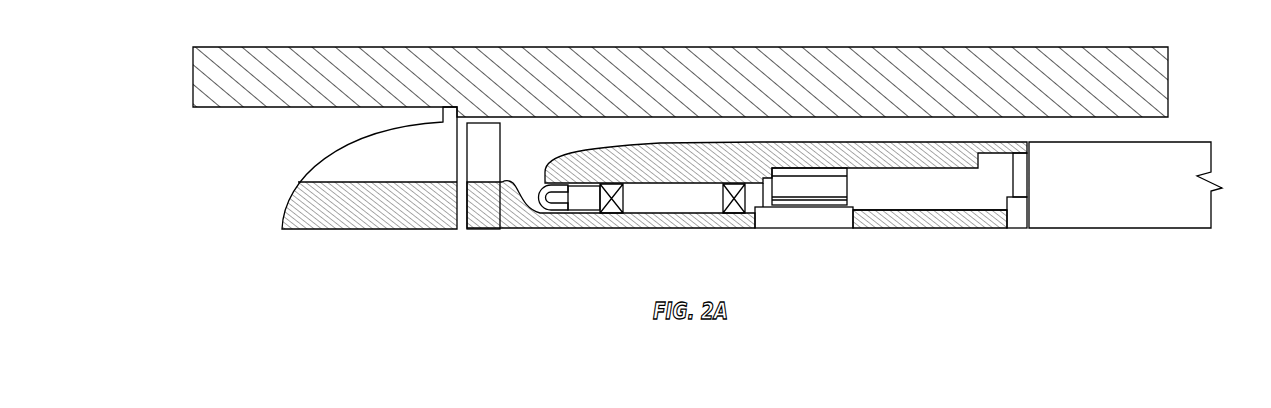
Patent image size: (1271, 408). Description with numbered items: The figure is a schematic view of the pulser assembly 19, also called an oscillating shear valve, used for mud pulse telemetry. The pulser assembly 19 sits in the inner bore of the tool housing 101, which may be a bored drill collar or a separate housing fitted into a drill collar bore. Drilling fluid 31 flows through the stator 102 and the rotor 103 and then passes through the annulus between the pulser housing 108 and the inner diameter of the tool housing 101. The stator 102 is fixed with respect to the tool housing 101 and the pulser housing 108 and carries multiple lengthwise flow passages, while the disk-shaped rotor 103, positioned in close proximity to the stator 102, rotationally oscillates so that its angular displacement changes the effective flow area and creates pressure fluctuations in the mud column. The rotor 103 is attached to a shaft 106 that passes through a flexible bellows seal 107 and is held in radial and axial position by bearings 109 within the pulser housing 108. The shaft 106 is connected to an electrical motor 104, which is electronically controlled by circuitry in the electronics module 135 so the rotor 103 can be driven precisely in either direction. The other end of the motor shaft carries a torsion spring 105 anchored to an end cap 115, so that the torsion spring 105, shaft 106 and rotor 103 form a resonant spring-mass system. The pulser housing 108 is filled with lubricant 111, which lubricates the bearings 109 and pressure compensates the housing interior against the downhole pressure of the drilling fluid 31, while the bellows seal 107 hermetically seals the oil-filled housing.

The pulser assembly 19 is at (938, 130).
The drilling fluid 31 is at (268, 159).
The tool housing 101 is at (295, 47).
The stator 102 is at (347, 145).
The rotor 103 is at (485, 122).
The electrical motor 104 is at (808, 172).
The torsion spring 105 is at (948, 208).
The shaft 106 is at (517, 188).
The flexible bellows seal 107 is at (550, 202).
The pulser housing 108 is at (687, 145).
The bearings 109 is at (735, 195).
The lubricant 111 is at (904, 200).
The end cap 115 is at (1022, 180).
The electronics module 135 is at (1163, 140).